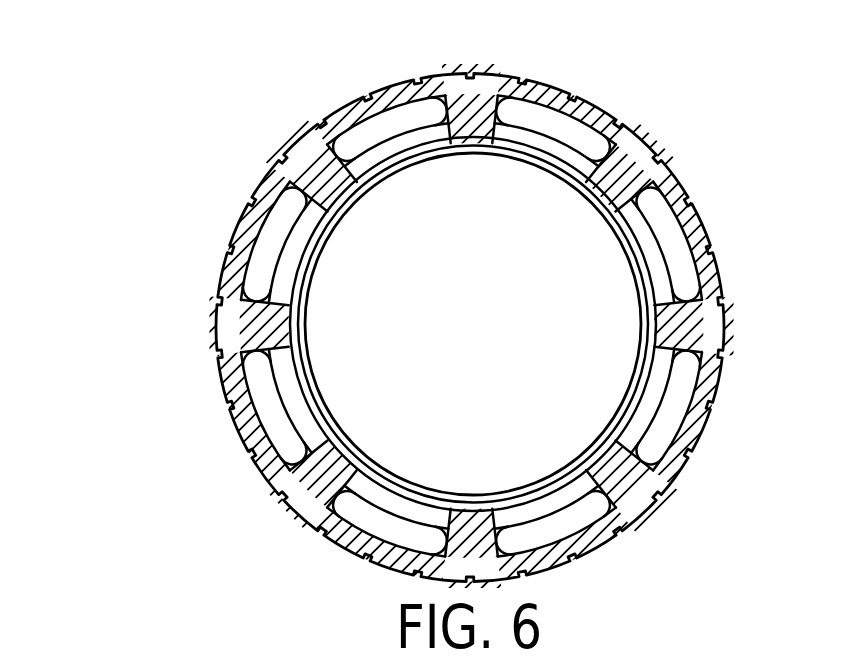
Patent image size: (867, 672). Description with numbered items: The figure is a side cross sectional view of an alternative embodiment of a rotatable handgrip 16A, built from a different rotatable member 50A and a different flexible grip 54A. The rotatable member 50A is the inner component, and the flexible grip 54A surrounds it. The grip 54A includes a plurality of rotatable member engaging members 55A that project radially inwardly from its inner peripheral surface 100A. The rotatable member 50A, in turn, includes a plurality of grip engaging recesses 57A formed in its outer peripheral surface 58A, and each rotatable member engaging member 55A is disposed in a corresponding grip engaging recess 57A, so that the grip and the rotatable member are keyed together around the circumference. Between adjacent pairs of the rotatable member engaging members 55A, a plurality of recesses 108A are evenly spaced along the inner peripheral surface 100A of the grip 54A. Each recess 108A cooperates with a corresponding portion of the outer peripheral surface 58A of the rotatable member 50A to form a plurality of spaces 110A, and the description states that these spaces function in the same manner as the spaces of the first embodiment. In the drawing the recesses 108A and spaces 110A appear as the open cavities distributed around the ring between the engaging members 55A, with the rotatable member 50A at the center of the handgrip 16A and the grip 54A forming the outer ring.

The rotatable handgrip 16A is at (150, 210).
The rotatable member 50A is at (393, 500).
The flexible grip 54A is at (395, 98).
The rotatable member engaging members 55A is at (471, 140).
The grip engaging recesses 57A is at (705, 320).
The outer peripheral surface 58A is at (353, 140).
The inner peripheral surface 100A is at (285, 350).
The recesses 108A is at (372, 152).
The windings 110A is at (418, 112).